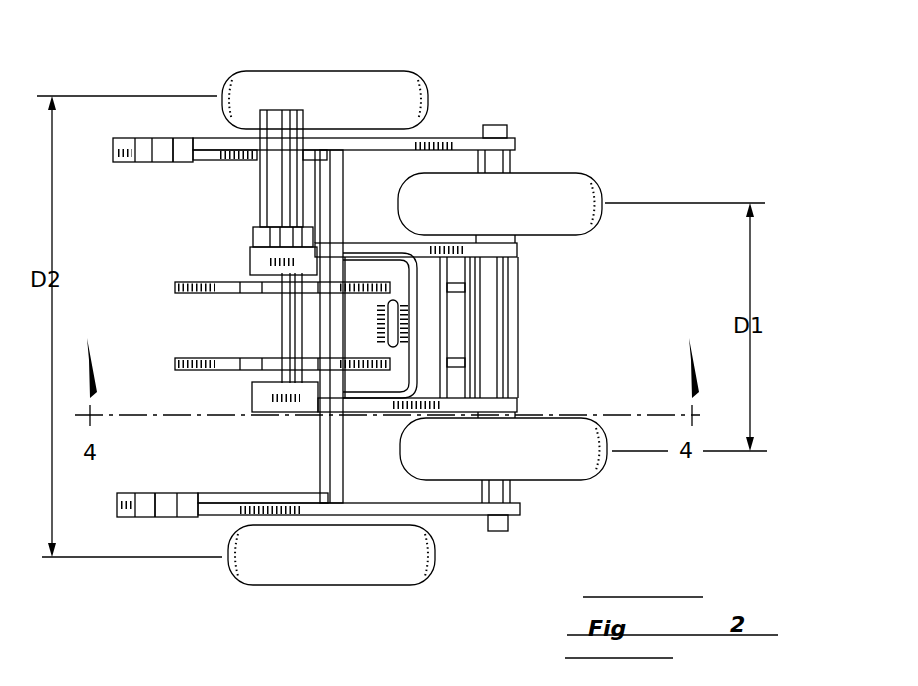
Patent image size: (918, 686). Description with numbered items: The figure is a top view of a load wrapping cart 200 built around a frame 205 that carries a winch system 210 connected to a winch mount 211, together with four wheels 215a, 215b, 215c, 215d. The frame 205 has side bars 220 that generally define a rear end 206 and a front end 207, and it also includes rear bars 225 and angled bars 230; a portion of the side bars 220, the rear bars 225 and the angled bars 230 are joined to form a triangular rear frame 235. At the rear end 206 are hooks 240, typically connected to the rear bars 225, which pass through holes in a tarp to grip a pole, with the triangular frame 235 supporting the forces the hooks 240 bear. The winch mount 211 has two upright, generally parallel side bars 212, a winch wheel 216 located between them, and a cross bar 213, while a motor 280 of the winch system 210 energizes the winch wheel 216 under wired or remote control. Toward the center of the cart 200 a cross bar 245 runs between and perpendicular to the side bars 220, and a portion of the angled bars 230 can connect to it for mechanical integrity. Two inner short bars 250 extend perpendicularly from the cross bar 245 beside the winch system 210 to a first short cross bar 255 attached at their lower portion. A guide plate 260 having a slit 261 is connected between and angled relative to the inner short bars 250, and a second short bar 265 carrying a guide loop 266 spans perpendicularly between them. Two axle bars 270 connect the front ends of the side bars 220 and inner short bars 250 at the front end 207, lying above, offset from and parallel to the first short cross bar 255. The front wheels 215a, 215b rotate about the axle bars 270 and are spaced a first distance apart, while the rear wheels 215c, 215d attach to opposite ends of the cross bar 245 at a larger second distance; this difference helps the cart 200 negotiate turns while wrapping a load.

The load wrapping cart 200 is at (574, 76).
The frame 205 is at (443, 98).
The rear end 206 is at (131, 326).
The front end 207 is at (625, 276).
The winch system 210 is at (158, 290).
The winch mount 211 is at (246, 243).
The side bars 212 is at (250, 262).
The cross bar 213 is at (283, 318).
The front wheel 215a is at (570, 183).
The front wheel 215b is at (577, 472).
The rear wheel 215c is at (233, 87).
The rear wheel 215d is at (232, 573).
The winch wheel 216 is at (180, 362).
The side bars 220 is at (448, 138).
The rear bars 225 is at (183, 155).
The angled bars 230 is at (222, 152).
The triangular rear frame 235 is at (133, 175).
The hooks 240 is at (112, 152).
The cross bar 245 is at (325, 465).
The inner short bars 250 is at (348, 248).
The first short cross bar 255 is at (505, 353).
The guide plate 260 is at (388, 384).
The slit 261 is at (383, 310).
The second short bar 265 is at (450, 317).
The guide loop 266 is at (470, 270).
The axle bars 270 is at (510, 162).
The motor 280 is at (277, 117).